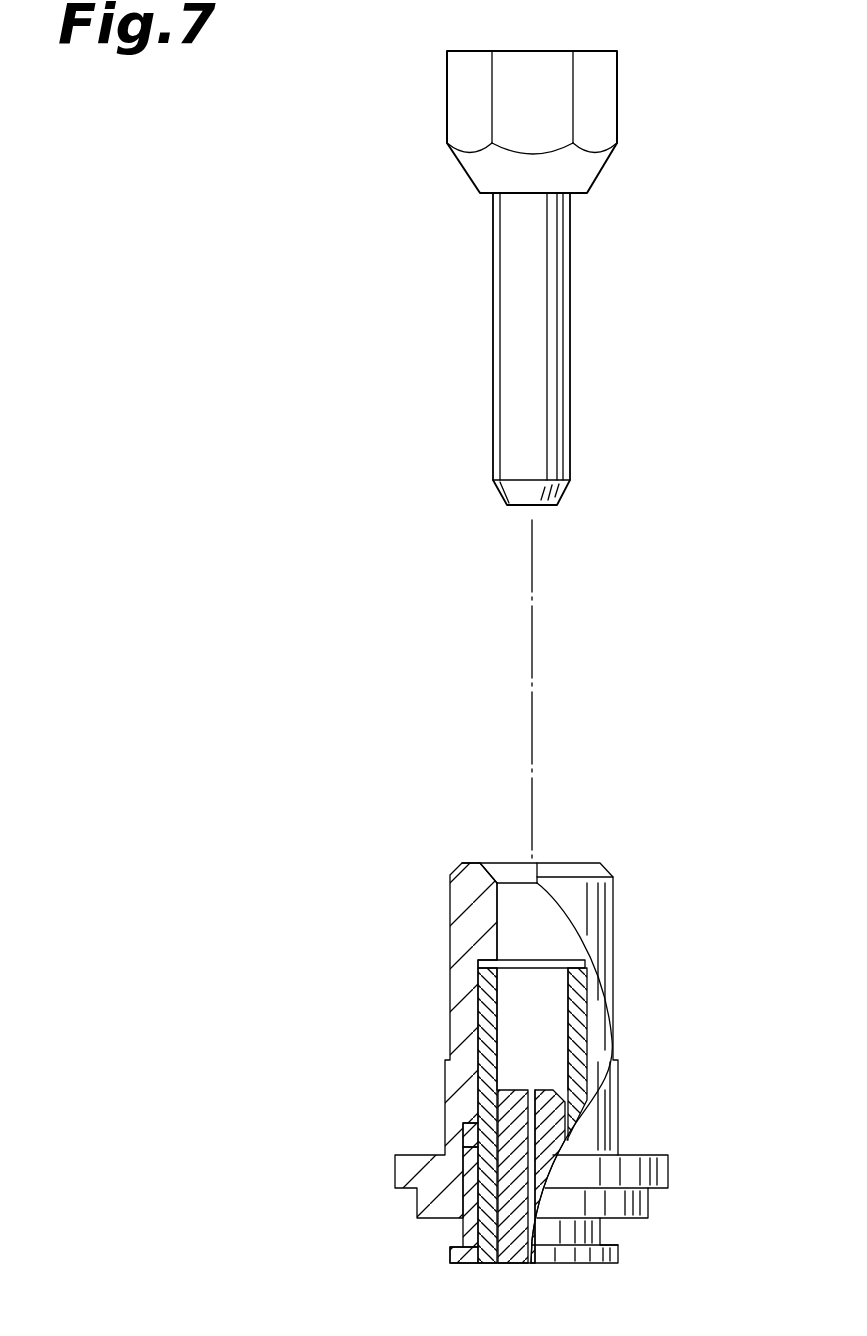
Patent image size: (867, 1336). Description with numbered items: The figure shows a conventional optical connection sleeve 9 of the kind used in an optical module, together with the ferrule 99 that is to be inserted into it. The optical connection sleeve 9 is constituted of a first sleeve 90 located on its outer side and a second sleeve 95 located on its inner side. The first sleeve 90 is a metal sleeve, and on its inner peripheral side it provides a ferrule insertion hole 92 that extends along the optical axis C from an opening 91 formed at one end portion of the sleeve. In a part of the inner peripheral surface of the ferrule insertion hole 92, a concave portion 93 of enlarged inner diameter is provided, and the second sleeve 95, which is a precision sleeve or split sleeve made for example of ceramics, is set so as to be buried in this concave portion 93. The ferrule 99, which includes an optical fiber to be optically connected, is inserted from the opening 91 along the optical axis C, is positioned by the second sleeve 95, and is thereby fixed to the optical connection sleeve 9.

The ferrule 99 is at (537, 398).
The optical axis C is at (532, 652).
The optical connection sleeve 9 is at (646, 866).
The opening 91 is at (505, 862).
The ferrule insertion hole 92 is at (510, 920).
The first sleeve 90 is at (597, 968).
The second sleeve 95 is at (590, 1030).
The concave portion 93 is at (477, 1070).